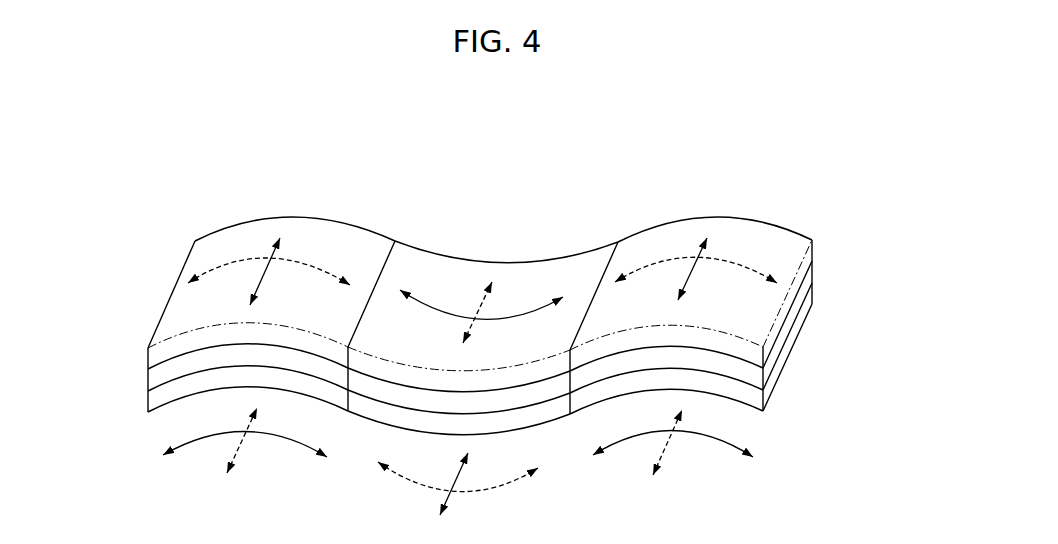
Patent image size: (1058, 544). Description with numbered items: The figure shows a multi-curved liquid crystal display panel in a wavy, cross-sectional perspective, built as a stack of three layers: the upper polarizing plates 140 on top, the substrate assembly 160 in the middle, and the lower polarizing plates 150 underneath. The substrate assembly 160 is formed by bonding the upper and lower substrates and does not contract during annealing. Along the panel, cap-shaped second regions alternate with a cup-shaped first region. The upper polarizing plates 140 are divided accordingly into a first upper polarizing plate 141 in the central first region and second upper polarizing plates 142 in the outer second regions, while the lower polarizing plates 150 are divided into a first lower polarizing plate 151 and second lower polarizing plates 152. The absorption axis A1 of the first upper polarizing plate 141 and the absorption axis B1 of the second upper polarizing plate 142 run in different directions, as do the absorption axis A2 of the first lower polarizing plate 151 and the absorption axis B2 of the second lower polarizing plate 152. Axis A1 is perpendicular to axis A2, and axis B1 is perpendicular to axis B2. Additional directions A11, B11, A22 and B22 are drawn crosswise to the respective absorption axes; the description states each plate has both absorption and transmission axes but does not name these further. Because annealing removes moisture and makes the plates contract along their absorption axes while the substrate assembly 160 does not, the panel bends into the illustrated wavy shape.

The upper polarizing plates 140 is at (513, 273).
The first upper polarizing plate 141 is at (501, 262).
The second upper polarizing plate 142 is at (290, 217).
The lower polarizing plates 150 is at (503, 380).
The first lower polarizing plate 151 is at (352, 412).
The second lower polarizing plate 152 is at (150, 412).
The substrate assembly 160 is at (812, 277).
The absorption axis of first upper polarizing plate A1 is at (481, 289).
The direction perpendicular to A1 A11 is at (482, 318).
The absorption axis of first lower polarizing plate A2 is at (467, 476).
The direction perpendicular to A2 A22 is at (462, 485).
The absorption axis of second upper polarizing plate B1 is at (492, 266).
The direction perpendicular to B1 B11 is at (482, 286).
The absorption axis of second lower polarizing plate B2 is at (460, 450).
The direction perpendicular to B2 B22 is at (454, 450).